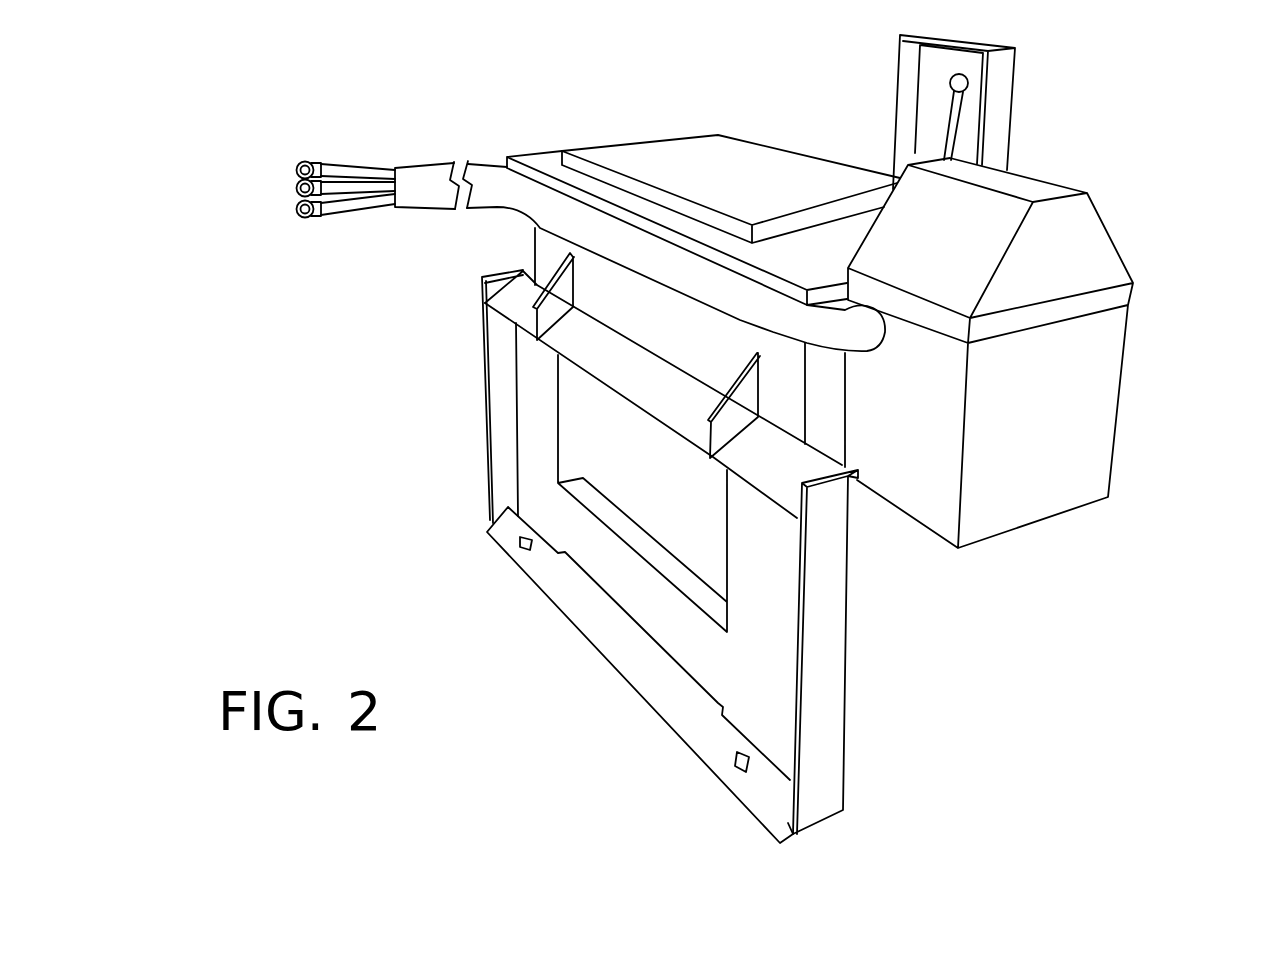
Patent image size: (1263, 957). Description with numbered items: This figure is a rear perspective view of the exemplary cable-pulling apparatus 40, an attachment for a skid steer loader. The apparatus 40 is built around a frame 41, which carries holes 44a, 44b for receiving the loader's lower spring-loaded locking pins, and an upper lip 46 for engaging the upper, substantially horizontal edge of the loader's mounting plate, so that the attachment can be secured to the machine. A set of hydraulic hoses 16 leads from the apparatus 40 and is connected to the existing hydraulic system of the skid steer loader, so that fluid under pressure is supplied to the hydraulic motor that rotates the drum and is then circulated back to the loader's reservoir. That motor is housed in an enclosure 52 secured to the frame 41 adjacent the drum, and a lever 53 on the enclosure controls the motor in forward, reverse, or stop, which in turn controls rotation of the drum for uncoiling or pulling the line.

The apparatus 40 is at (164, 166).
The hydraulic hoses 16 is at (417, 165).
The frame 41 is at (723, 665).
The hole 44a is at (520, 540).
The hole 44b is at (743, 762).
The upper lip 46 is at (613, 356).
The enclosure 52 is at (1097, 382).
The lever 53 is at (958, 110).